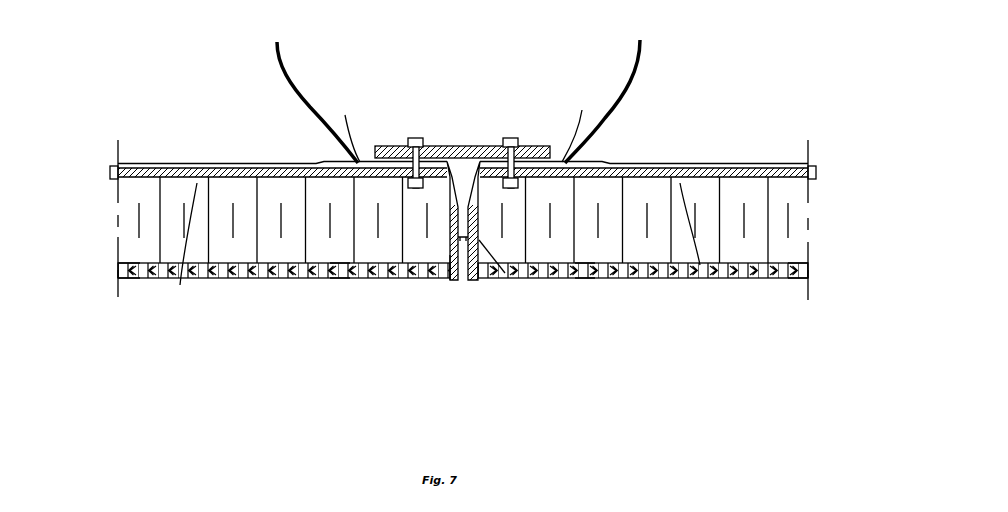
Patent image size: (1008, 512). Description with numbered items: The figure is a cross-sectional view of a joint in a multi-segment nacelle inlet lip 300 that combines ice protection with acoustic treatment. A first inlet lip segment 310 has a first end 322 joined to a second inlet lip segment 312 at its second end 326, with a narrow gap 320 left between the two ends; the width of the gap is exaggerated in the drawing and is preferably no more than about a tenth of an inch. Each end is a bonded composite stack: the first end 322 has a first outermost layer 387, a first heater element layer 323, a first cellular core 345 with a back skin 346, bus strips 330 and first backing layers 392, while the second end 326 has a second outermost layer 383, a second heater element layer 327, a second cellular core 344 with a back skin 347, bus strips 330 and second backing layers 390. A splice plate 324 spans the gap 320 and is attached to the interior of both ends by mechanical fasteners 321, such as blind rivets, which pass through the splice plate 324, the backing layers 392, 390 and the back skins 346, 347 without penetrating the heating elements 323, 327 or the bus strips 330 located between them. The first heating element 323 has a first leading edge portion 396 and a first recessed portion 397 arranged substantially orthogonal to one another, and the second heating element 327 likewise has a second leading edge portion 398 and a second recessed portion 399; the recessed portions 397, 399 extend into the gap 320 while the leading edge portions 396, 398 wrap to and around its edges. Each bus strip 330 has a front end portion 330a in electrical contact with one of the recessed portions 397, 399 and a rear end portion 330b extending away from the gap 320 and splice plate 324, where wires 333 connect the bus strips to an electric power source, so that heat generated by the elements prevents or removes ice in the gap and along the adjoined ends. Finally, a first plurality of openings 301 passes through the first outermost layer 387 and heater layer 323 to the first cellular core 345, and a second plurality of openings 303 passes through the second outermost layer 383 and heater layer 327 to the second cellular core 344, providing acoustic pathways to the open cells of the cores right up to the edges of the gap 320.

The nacelle inlet lip 300 is at (731, 55).
The first plurality of openings 301 is at (292, 280).
The second plurality of openings 303 is at (737, 280).
The first inlet lip segment 310 is at (220, 277).
The second inlet lip segment 312 is at (664, 278).
The gap 320 is at (459, 279).
The mechanical fasteners 321 is at (510, 138).
The first end 322 is at (453, 280).
The first heater element layer 323 is at (116, 266).
The splice plate 324 is at (548, 146).
The second end 326 is at (477, 280).
The second heater element layer 327 is at (810, 272).
The bus strips 330 is at (327, 161).
The front end portion 330a is at (505, 273).
The rear end portion 330b is at (345, 115).
The wires 333 is at (276, 63).
The second cellular core 344 is at (805, 205).
The first cellular core 345 is at (123, 190).
The back skin 346 is at (180, 285).
The back skin 347 is at (700, 265).
The second outermost layer 383 is at (810, 275).
The first outermost layer 387 is at (117, 274).
The second backing layers 390 is at (818, 175).
The first backing layers 392 is at (109, 172).
The first leading edge portion 396 is at (345, 280).
The first recessed portion 397 is at (452, 245).
The second leading edge portion 398 is at (583, 280).
The second recessed portion 399 is at (446, 280).